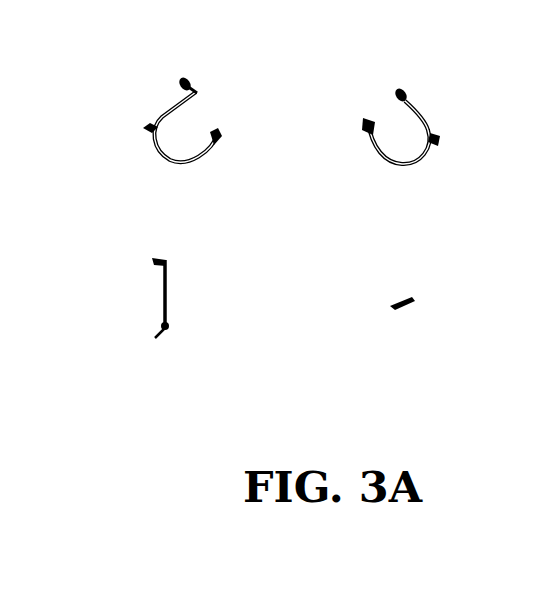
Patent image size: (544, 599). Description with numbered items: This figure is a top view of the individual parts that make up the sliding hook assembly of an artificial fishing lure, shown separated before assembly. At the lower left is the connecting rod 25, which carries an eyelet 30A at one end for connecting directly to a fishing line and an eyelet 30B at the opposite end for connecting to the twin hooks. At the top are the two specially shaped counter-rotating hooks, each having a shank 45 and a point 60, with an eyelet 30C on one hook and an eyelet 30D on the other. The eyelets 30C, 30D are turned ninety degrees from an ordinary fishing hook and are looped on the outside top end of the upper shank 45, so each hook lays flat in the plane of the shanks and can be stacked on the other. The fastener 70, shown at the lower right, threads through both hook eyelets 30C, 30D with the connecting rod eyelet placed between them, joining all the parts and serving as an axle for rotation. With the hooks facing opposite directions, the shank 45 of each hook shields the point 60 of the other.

The connecting rod 25 is at (170, 285).
The eyelet 30A is at (152, 262).
The eyelet 30B is at (150, 341).
The eyelet 30C is at (147, 101).
The eyelet 30D is at (438, 117).
The shank 45 is at (142, 128).
The point 60 is at (226, 154).
The fastener 70 is at (418, 302).